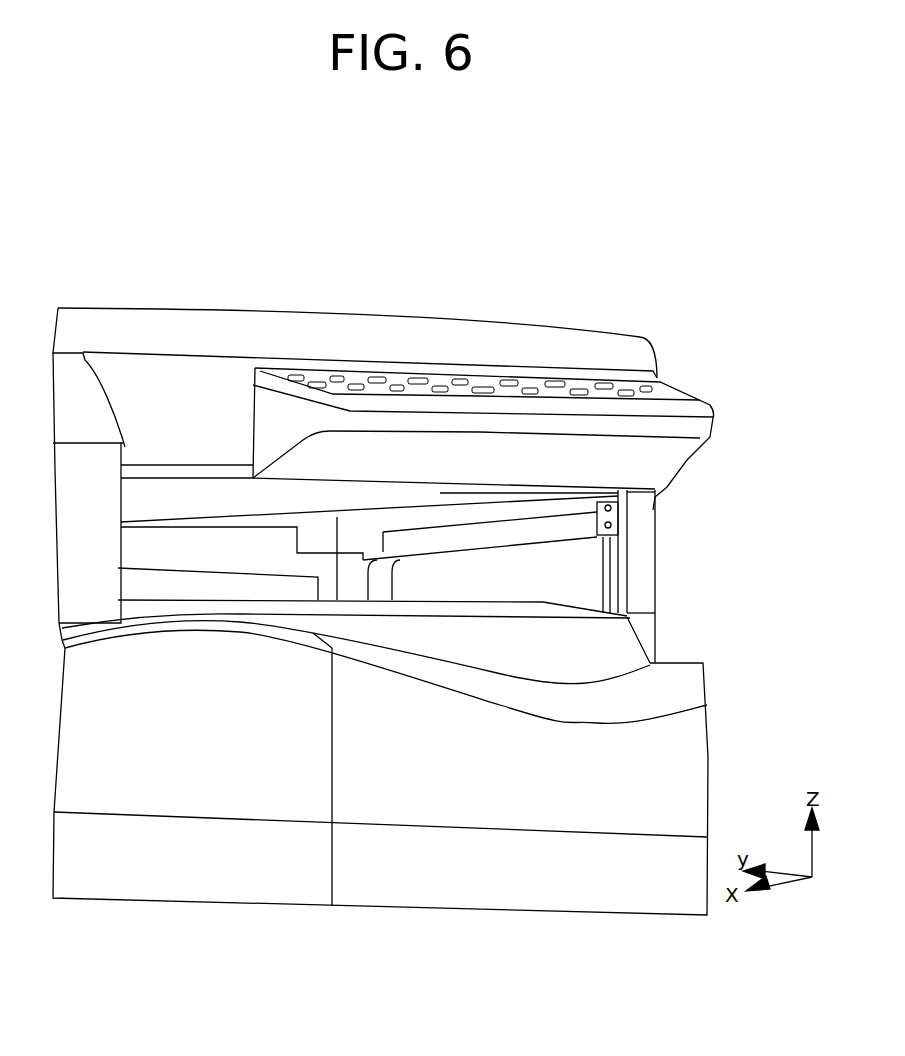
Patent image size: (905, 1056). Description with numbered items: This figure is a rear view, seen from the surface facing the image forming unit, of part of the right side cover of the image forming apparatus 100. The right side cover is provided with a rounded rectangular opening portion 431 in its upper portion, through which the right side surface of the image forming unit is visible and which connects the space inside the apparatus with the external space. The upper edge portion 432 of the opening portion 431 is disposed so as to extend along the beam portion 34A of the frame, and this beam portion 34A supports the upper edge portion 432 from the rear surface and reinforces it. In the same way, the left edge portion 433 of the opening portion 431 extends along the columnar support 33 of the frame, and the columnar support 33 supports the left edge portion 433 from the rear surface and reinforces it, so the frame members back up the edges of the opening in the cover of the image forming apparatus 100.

The image forming apparatus 100 is at (702, 378).
The opening portion 431 is at (482, 566).
The upper edge portion 432 is at (497, 533).
The beam portion 34A is at (555, 510).
The columnar support 33 is at (610, 600).
The left edge portion 433 is at (647, 563).